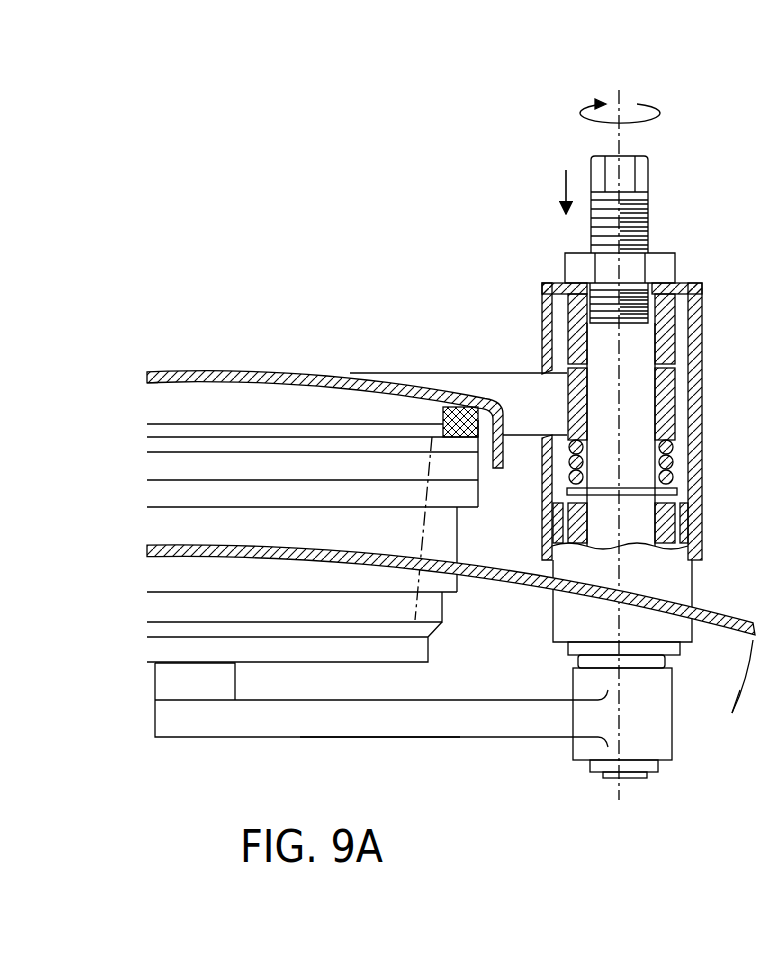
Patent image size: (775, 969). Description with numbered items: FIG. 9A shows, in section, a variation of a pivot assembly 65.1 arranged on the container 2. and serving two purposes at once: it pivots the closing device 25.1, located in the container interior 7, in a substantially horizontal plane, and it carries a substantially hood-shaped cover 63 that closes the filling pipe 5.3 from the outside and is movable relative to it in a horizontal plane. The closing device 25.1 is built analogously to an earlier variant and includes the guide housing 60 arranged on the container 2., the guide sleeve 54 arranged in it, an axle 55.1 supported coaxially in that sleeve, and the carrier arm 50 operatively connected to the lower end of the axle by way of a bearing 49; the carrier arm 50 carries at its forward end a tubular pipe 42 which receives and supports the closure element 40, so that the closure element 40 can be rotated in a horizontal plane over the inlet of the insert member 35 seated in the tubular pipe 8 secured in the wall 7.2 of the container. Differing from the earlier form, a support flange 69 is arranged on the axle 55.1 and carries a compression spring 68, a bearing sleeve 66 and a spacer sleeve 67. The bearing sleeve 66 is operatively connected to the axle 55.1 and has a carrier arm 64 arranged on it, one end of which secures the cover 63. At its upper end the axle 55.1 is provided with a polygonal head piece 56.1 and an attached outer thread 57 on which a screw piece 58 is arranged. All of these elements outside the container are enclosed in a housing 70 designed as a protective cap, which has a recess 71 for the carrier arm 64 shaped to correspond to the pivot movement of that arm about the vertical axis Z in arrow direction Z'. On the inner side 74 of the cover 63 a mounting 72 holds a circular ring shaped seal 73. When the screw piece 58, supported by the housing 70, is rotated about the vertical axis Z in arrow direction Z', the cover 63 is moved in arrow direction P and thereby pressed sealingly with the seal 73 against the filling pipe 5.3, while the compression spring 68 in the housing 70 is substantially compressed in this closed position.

The vertical axis Z is at (658, 445).
The arrow direction Z' is at (641, 110).
The arrow direction P is at (561, 190).
The polygonal head piece 56.1 is at (640, 178).
The outer thread 57 is at (649, 217).
The screw piece 58 is at (665, 264).
The housing 70 is at (542, 292).
The recess 71 is at (538, 370).
The carrier arm 64 is at (455, 386).
The spacer sleeve 67 is at (663, 342).
The axle 55.1 is at (640, 390).
The bearing sleeve 66 is at (672, 427).
The compression spring 68 is at (675, 460).
The support flange 69 is at (677, 492).
The guide sleeve 54 is at (667, 520).
The cover 63 is at (232, 364).
The inner side 74 is at (183, 382).
The mounting 72 is at (440, 412).
The seal 73 is at (455, 423).
The filling pipe 5.3 is at (303, 430).
The tubular pipe 8 is at (440, 535).
The insert member 35 is at (430, 610).
The closure element 40 is at (437, 656).
The tubular pipe 42 is at (200, 690).
The carrier arm 50 is at (358, 738).
The closing device 25.1 is at (461, 744).
The guide housing 60 is at (568, 612).
The bearing 49 is at (573, 743).
The pivot assembly 65.1 is at (570, 770).
The table plate 7.2 is at (740, 612).
The container interior 7 is at (716, 680).
The container 2. is at (758, 668).